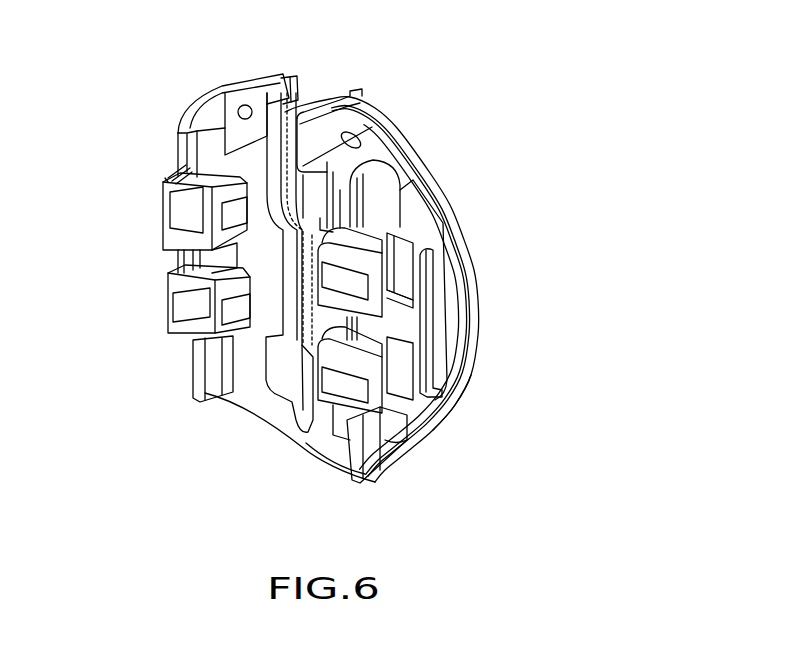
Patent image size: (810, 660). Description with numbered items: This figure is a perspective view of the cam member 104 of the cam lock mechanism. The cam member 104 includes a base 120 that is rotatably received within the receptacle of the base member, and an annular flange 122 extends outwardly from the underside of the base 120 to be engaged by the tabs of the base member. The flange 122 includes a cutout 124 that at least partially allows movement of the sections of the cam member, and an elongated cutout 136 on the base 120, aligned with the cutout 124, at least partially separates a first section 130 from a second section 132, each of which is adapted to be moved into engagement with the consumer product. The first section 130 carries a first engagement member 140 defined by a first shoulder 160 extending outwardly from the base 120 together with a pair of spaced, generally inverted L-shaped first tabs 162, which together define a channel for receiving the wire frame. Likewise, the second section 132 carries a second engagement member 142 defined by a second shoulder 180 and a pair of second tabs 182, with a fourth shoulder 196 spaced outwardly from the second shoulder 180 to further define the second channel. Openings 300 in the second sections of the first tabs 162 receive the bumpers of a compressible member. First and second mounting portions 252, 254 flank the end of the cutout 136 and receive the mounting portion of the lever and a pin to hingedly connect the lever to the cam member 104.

The cam member 104 is at (603, 200).
The base 120 is at (280, 417).
The annular flange 122 is at (468, 244).
The cutout 124 is at (292, 90).
The first section 130 is at (247, 357).
The second section 132 is at (413, 232).
The elongated cutout 136 is at (215, 362).
The first engagement member 140 is at (147, 337).
The second engagement member 142 is at (423, 420).
The first shoulder 160 is at (213, 262).
The first tab 162 is at (173, 197).
The second shoulder 180 is at (377, 327).
The second tab 182 is at (353, 260).
The fourth shoulder 196 is at (430, 348).
The first mounting portion 252 is at (260, 104).
The second mounting portion 254 is at (335, 110).
The openings 300 is at (233, 203).